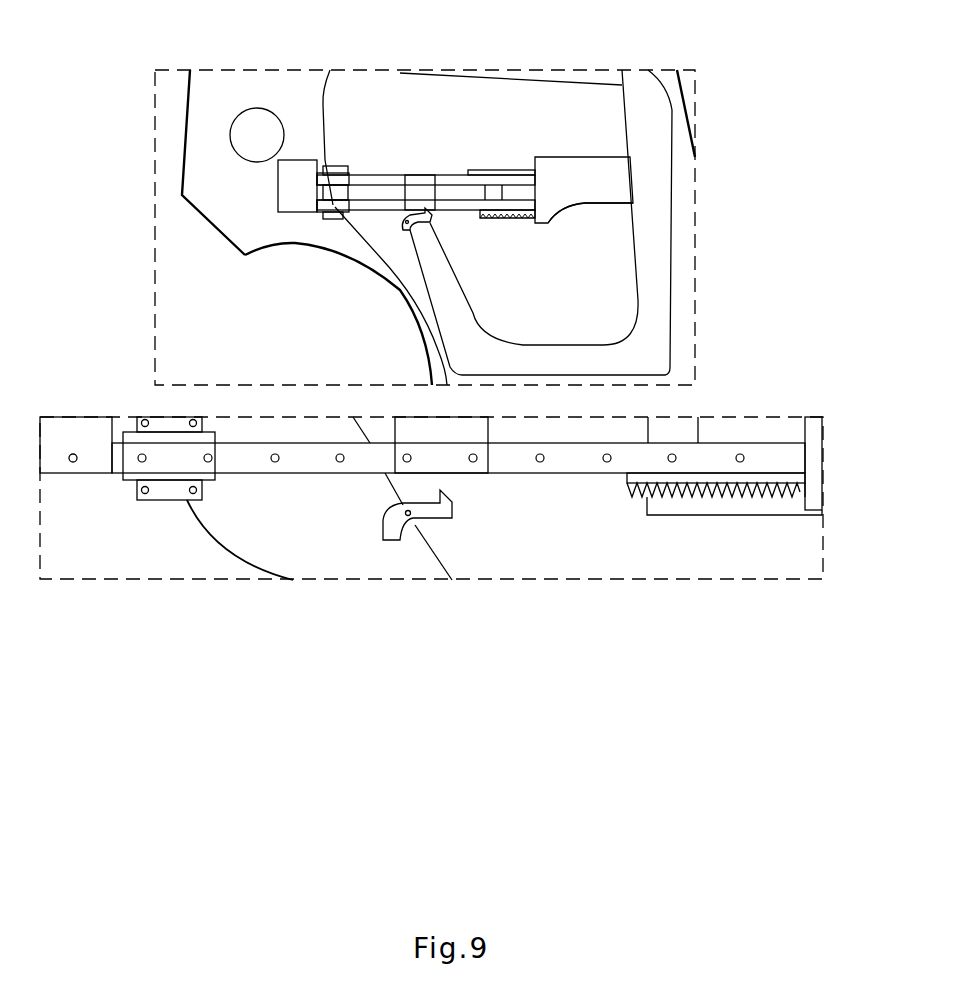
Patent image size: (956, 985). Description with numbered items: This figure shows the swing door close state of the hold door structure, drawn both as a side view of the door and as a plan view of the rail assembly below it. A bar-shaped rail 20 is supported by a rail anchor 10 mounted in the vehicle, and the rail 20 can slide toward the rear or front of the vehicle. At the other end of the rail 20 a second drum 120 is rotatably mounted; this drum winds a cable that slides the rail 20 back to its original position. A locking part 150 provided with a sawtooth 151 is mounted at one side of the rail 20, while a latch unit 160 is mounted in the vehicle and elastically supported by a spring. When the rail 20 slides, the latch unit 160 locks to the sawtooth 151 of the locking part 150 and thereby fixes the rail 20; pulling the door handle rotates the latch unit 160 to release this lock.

The rail anchor 10 is at (420, 183).
The rail 20 is at (480, 180).
The second drum 120 is at (287, 200).
The locking part 150 is at (518, 217).
The sawtooth 151 is at (733, 497).
The latch unit 160 is at (398, 228).